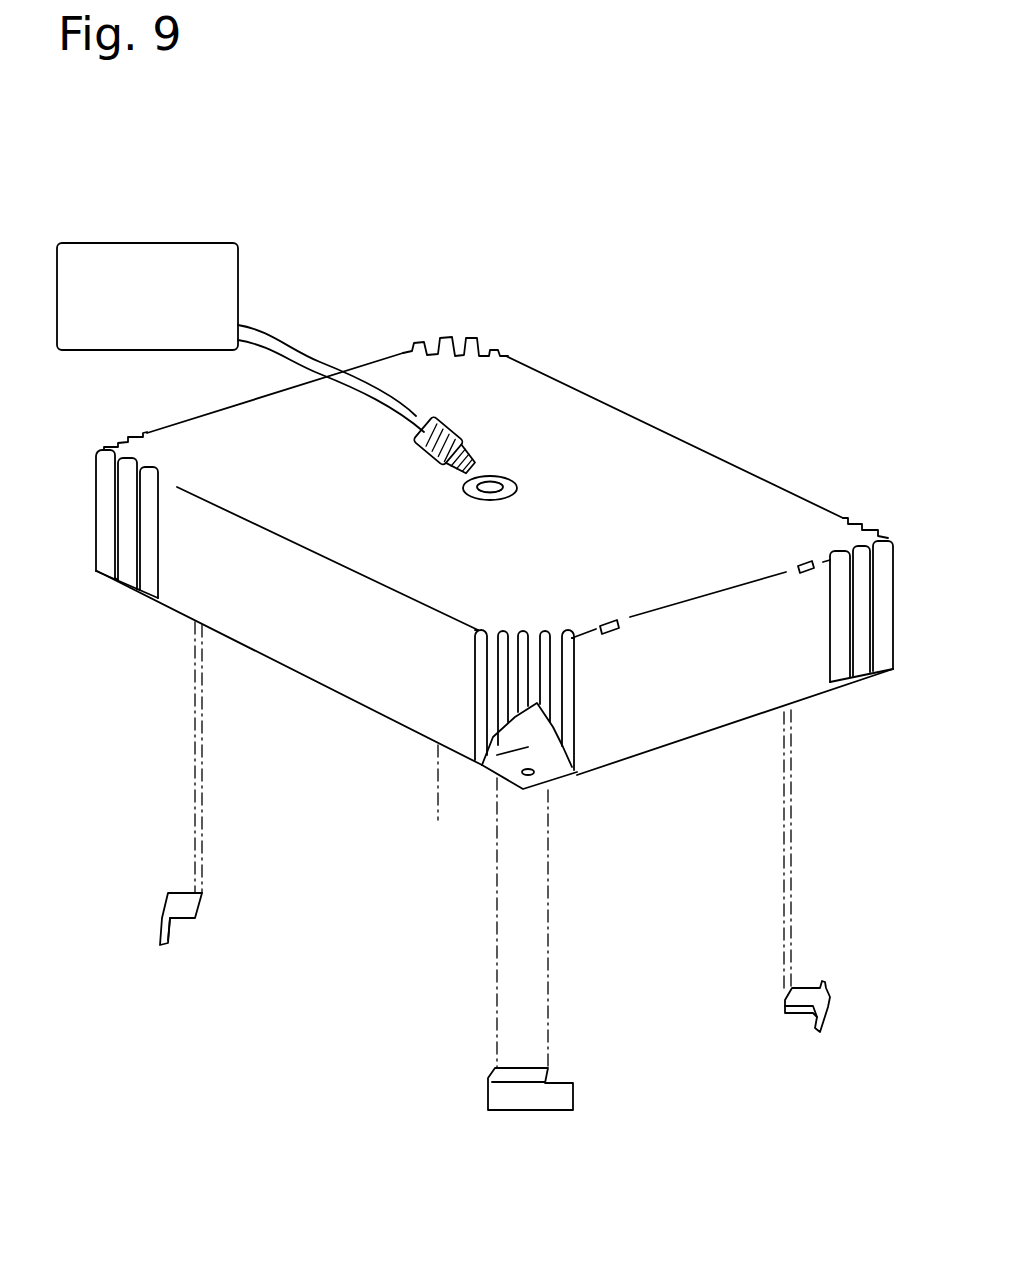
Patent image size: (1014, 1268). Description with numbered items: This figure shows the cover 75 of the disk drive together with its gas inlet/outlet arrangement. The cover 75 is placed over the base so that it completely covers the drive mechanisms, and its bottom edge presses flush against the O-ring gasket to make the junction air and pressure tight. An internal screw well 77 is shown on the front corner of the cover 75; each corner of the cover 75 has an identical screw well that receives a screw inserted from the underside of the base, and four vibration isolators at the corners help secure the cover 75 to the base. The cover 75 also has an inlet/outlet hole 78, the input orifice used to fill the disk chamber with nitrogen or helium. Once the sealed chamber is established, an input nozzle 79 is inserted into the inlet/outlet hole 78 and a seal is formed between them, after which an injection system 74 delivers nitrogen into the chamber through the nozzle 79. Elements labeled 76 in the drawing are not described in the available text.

The injection system 74 is at (192, 263).
The cover 75 is at (706, 449).
The mounting clip 76 is at (825, 982).
The internal screw well 77 is at (543, 793).
The inlet/outlet hole 78 is at (497, 473).
The input nozzle 79 is at (428, 417).